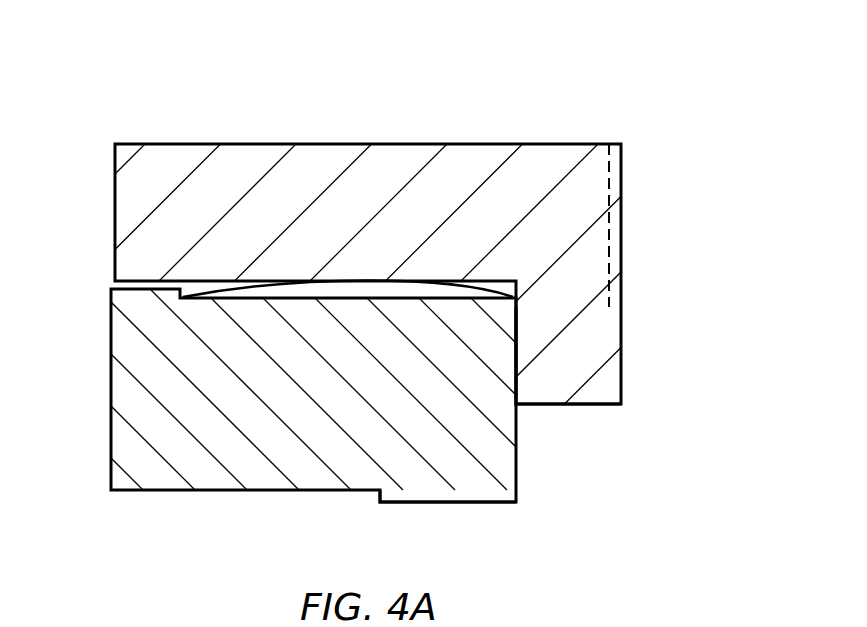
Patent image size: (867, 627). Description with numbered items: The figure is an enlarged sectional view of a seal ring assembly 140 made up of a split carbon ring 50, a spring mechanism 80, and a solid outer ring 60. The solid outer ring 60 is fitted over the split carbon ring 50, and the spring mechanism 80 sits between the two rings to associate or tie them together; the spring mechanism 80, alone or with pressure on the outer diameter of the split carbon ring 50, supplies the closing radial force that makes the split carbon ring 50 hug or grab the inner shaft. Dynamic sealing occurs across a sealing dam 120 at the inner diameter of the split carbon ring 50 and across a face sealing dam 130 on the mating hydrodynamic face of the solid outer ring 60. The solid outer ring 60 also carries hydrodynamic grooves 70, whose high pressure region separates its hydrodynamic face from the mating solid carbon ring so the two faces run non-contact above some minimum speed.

The seal ring assembly 140 is at (620, 94).
The solid outer ring 60 is at (312, 177).
The hydrodynamic grooves 70 is at (612, 238).
The split carbon ring 50 is at (278, 390).
The spring mechanism 80 is at (247, 290).
The sealing dam 120 is at (516, 506).
The face sealing dam 130 is at (632, 307).